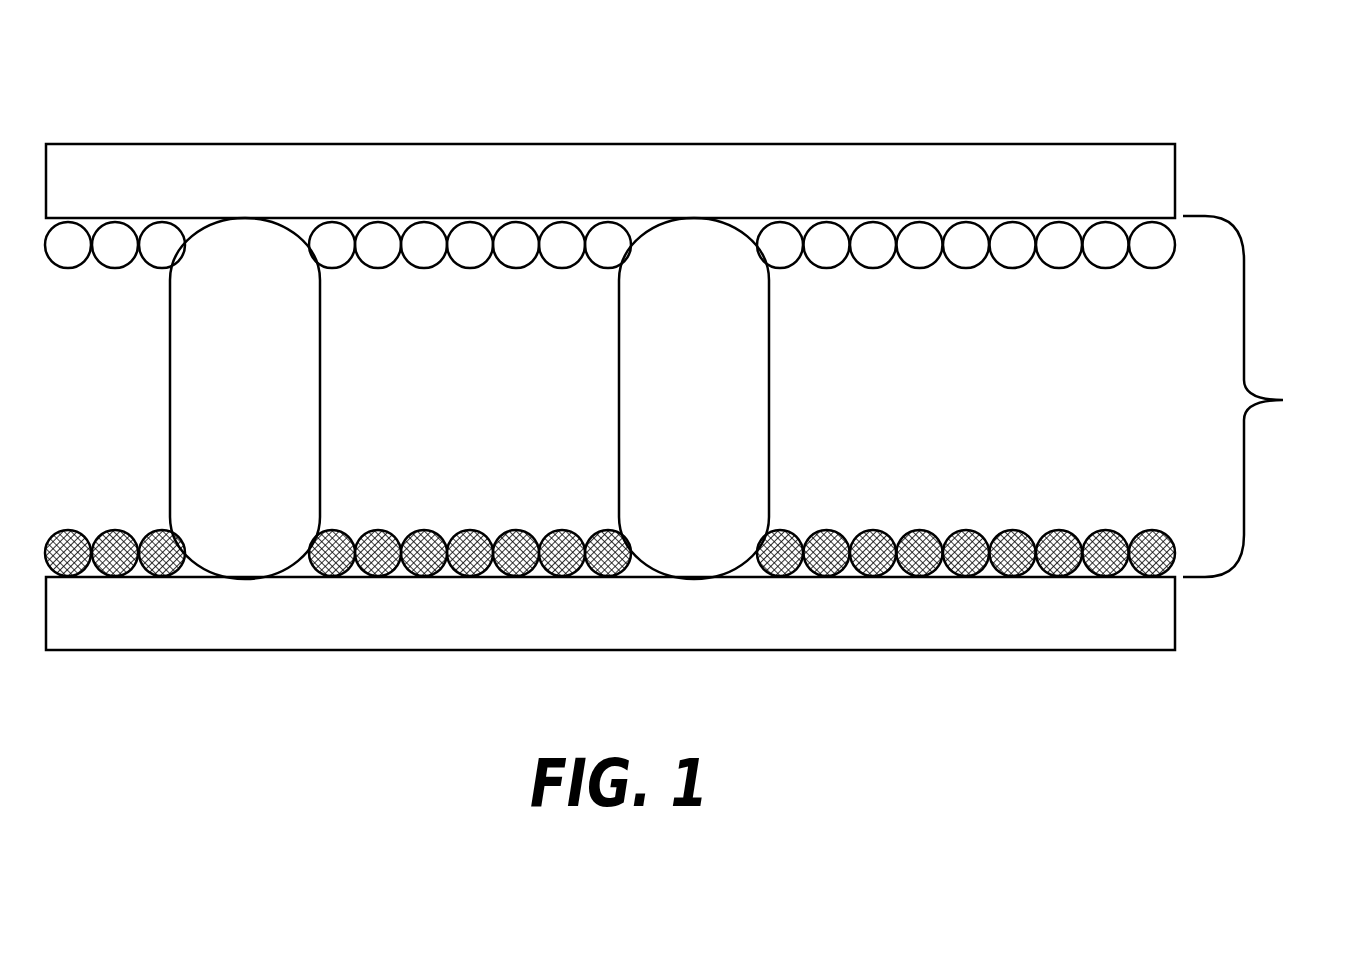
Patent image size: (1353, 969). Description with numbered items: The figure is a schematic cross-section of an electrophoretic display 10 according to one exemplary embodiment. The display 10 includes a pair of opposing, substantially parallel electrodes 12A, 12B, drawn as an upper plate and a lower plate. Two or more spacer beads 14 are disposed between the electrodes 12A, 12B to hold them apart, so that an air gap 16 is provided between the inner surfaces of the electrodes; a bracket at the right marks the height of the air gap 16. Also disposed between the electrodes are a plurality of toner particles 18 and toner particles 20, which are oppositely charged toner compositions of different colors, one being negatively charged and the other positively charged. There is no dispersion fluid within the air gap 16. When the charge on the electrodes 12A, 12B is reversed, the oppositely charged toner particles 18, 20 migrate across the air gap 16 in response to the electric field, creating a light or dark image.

The electrophoretic display 10 is at (1058, 78).
The electrode 12A is at (181, 157).
The electrode 12B is at (181, 637).
The spacer bead 14 is at (693, 557).
The air gap 16 is at (1287, 400).
The toner particles 18 is at (470, 238).
The toner particles 20 is at (473, 560).